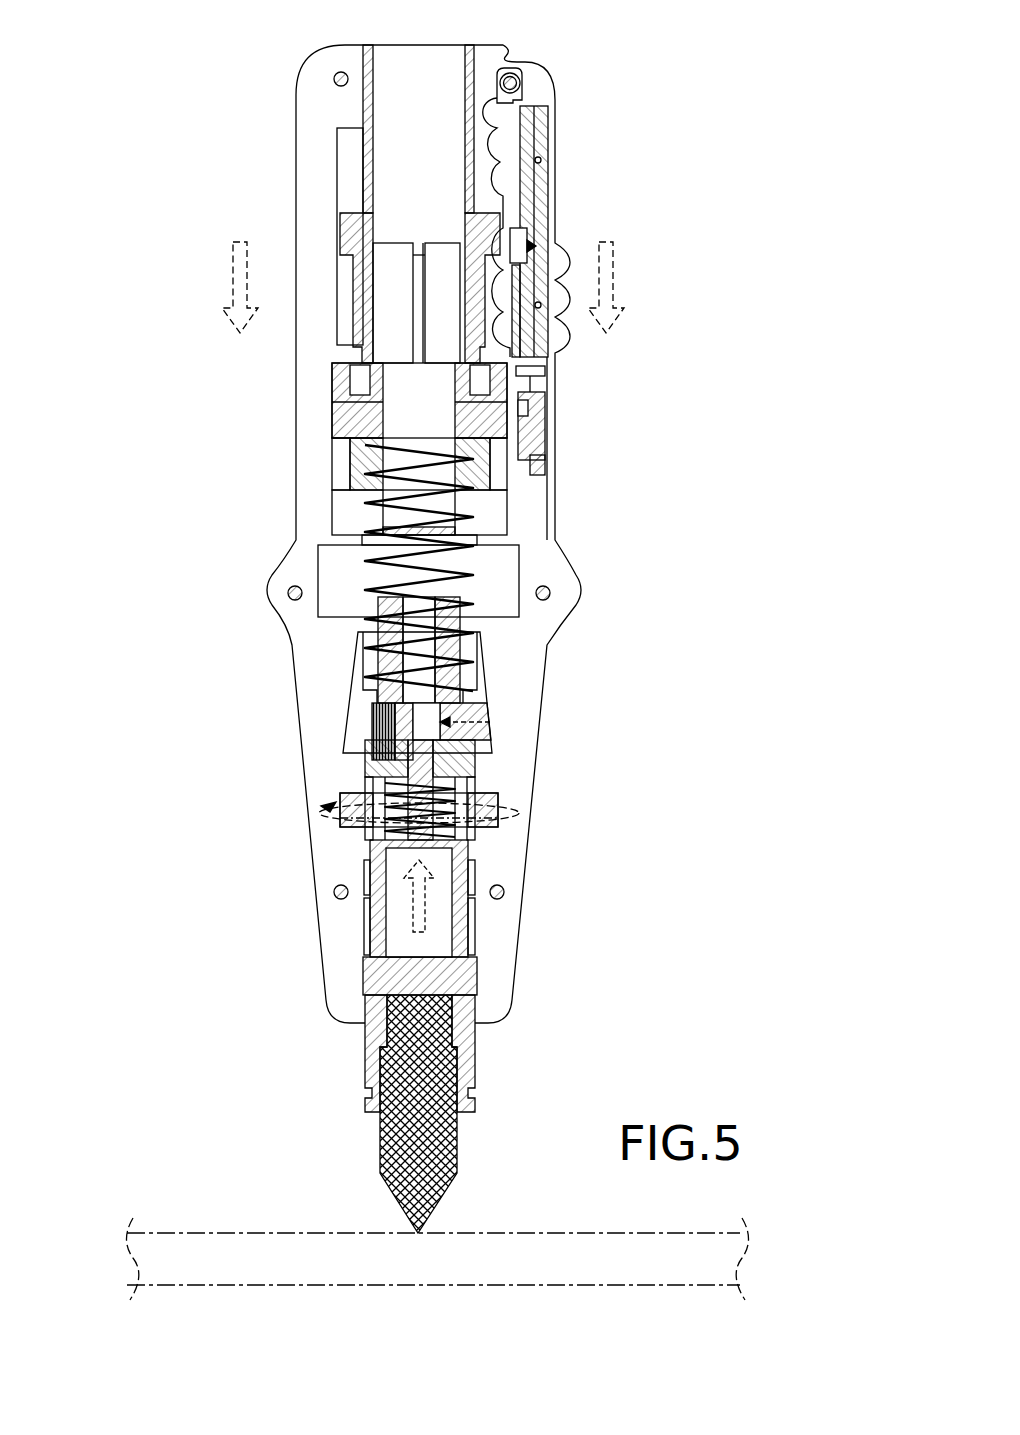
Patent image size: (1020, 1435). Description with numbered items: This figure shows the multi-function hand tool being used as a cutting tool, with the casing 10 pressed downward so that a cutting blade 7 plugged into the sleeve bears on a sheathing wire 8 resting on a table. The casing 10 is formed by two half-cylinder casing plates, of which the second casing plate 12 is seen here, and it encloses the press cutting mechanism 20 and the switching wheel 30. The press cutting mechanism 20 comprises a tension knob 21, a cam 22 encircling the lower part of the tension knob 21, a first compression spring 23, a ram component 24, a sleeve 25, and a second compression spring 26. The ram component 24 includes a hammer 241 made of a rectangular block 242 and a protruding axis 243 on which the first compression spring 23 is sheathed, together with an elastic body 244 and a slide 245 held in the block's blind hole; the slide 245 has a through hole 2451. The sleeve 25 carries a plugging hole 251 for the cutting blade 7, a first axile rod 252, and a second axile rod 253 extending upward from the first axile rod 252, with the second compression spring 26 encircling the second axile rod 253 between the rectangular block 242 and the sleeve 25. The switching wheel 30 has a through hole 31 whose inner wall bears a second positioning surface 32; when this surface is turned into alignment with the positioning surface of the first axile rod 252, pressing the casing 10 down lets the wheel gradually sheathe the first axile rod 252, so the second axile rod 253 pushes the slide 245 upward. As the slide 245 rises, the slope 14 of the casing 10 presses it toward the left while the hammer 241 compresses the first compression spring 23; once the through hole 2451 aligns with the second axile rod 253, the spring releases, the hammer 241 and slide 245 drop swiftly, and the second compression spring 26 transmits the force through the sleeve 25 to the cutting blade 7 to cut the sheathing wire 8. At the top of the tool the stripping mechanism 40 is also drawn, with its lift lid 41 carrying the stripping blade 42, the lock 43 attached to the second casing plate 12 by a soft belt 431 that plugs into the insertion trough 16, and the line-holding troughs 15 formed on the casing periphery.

The casing 10 is at (388, 534).
The second casing plate 12 is at (307, 110).
The slope 14 is at (485, 690).
The line-holding troughs 15 is at (498, 128).
The insertion trough 16 is at (530, 385).
The press cutting mechanism 20 is at (368, 797).
The tension knob 21 is at (333, 378).
The cam 22 is at (357, 457).
The first compression spring 23 is at (413, 485).
The ram component 24 is at (398, 686).
The hammer 241 is at (317, 653).
The rectangular block 242 is at (367, 710).
The protruding axis 243 is at (380, 606).
The elastic body 244 is at (367, 725).
The slide 245 is at (493, 737).
The through hole 2451 is at (490, 712).
The sleeve 25 is at (361, 1036).
The plugging hole 251 is at (385, 1088).
The first axile rod 252 is at (377, 862).
The second axile rod 253 is at (367, 783).
The second compression spring 26 is at (325, 797).
The switching wheel 30 is at (497, 822).
The through hole 31 is at (437, 835).
The second positioning surface 32 is at (477, 783).
The stripping mechanism 40 is at (572, 273).
The lift lid 41 is at (540, 80).
The stripping blade 42 is at (533, 128).
The lock 43 is at (548, 432).
The soft belt 431 is at (536, 447).
The cutting blade 7 is at (460, 1150).
The sheathing wire 8 is at (205, 1245).